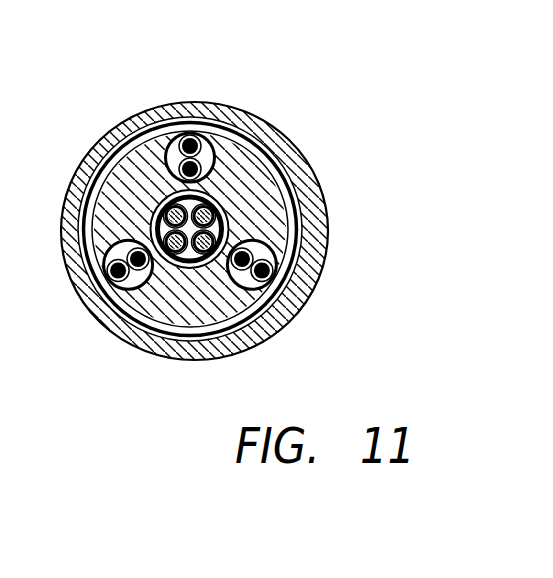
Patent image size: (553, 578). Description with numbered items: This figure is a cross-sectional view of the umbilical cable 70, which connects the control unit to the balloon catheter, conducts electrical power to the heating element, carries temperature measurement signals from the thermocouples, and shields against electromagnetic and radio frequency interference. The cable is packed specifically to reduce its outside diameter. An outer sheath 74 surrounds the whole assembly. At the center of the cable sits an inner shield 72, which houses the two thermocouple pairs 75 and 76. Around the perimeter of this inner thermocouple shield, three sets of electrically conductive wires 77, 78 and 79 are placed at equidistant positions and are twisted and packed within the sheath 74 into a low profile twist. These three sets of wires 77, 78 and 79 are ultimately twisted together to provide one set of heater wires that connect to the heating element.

The umbilical cable 70 is at (190, 231).
The inner shield 72 is at (208, 226).
The sheath 74 is at (72, 225).
The thermocouple pair 75 is at (173, 268).
The thermocouple pair 76 is at (195, 268).
The set of electrically conductive wires 77 is at (135, 292).
The set of electrically conductive wires 78 is at (165, 132).
The set of electrically conductive wires 79 is at (326, 238).